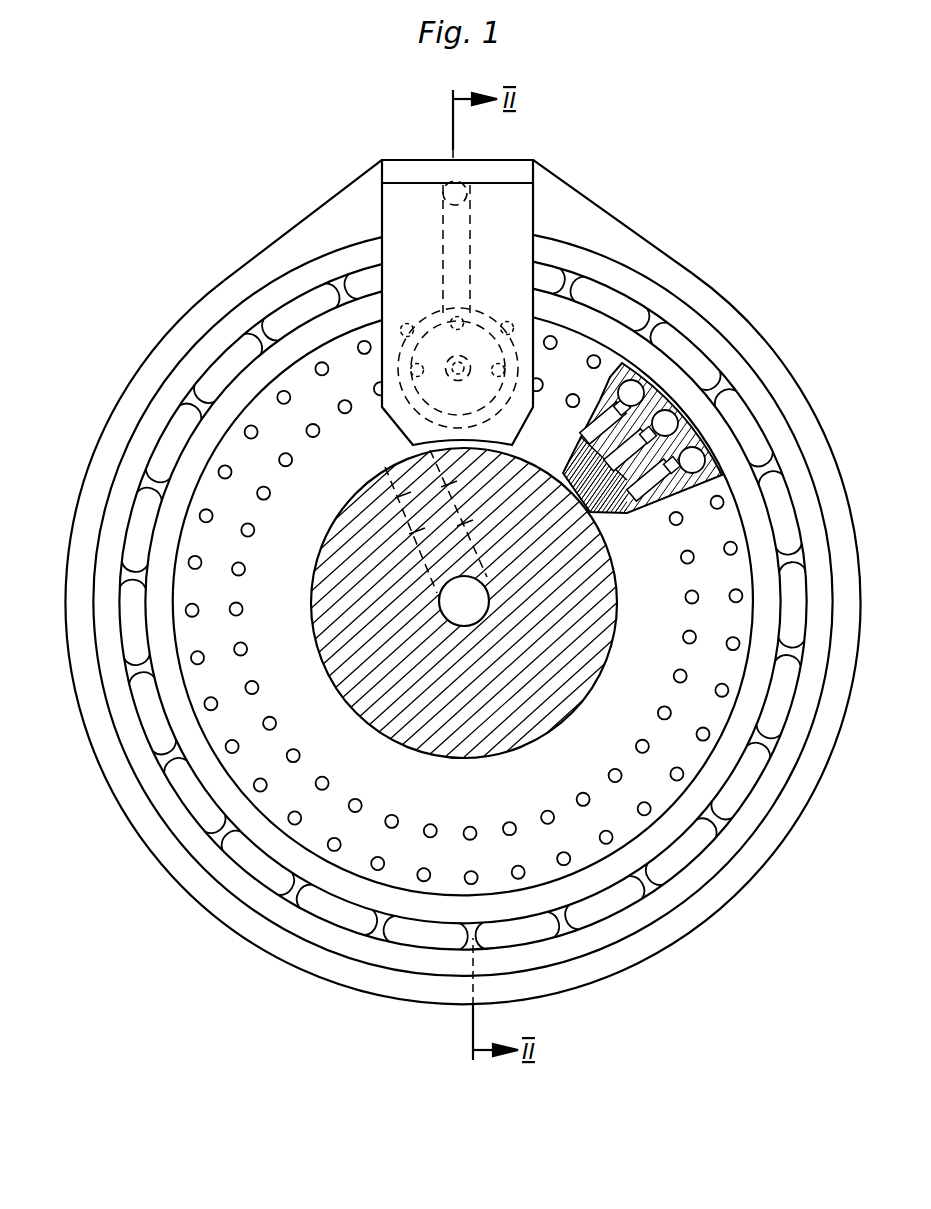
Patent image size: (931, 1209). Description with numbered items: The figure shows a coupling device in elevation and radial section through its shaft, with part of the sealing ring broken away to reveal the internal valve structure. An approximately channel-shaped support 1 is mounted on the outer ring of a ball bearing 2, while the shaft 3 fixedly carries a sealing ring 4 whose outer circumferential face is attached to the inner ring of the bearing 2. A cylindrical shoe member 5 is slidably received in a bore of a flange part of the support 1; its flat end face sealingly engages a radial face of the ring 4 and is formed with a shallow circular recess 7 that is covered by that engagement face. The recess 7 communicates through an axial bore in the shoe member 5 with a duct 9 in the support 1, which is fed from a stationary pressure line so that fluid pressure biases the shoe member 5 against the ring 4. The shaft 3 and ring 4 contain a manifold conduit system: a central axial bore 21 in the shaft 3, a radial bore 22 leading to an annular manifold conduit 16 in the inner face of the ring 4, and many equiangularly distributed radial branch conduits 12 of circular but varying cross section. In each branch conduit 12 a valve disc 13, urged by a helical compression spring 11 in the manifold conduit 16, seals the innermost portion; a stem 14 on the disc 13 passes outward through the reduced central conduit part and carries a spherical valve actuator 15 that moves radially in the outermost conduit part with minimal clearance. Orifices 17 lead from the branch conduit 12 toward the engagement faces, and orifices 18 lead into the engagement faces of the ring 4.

The support 1 is at (413, 173).
The ball bearing 2 is at (283, 283).
The shaft 3 is at (367, 525).
The sealing ring 4 is at (290, 636).
The cylindrical shoe member 5 is at (440, 415).
The shallow circular recess 7 is at (480, 390).
The duct 9 is at (465, 255).
The helical compression spring 11 is at (607, 494).
The radial branch conduit 12 is at (652, 497).
The valve disc 13 is at (635, 493).
The stem 14 is at (663, 477).
The spherical valve actuator 15 is at (691, 462).
The annular manifold conduit 16 is at (577, 465).
The orifice 17 is at (320, 430).
The orifice 18 is at (291, 397).
The central axial bore 21 is at (457, 588).
The radial bore 22 is at (403, 492).